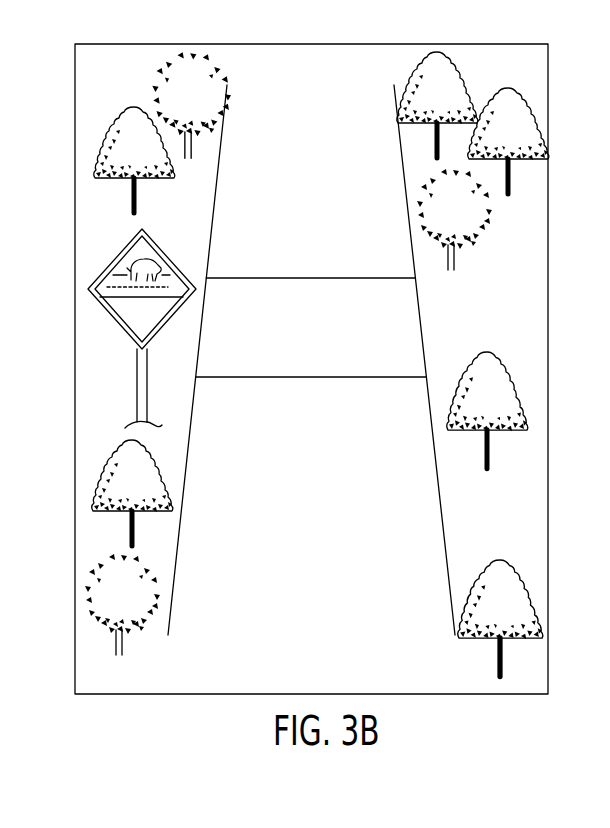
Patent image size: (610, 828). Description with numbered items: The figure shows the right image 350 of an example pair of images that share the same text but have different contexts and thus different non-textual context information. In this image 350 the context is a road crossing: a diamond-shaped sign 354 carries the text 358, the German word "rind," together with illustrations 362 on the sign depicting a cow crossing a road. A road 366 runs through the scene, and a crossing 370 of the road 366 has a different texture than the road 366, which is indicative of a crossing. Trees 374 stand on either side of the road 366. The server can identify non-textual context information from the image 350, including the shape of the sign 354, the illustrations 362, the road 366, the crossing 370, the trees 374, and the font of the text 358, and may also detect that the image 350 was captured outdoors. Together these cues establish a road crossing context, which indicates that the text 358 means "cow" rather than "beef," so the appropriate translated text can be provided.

The image 350 is at (300, 44).
The sign 354 is at (173, 316).
The text 358 is at (135, 325).
The illustrations 362 is at (139, 251).
The road 366 is at (432, 537).
The crossing 370 is at (408, 327).
The trees 374 is at (172, 95).